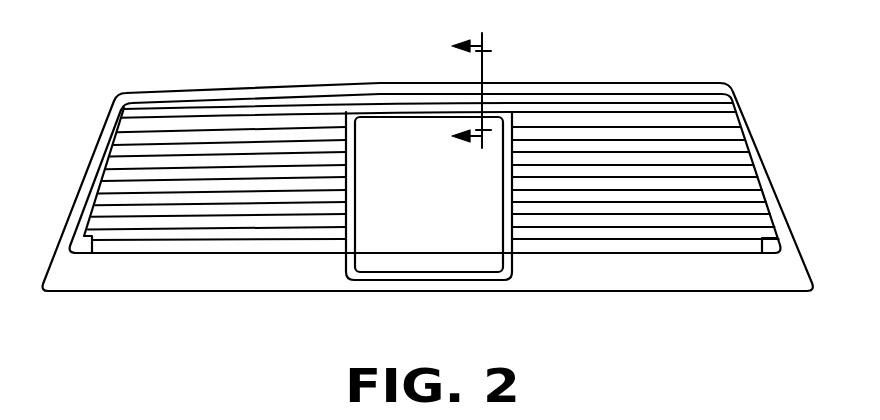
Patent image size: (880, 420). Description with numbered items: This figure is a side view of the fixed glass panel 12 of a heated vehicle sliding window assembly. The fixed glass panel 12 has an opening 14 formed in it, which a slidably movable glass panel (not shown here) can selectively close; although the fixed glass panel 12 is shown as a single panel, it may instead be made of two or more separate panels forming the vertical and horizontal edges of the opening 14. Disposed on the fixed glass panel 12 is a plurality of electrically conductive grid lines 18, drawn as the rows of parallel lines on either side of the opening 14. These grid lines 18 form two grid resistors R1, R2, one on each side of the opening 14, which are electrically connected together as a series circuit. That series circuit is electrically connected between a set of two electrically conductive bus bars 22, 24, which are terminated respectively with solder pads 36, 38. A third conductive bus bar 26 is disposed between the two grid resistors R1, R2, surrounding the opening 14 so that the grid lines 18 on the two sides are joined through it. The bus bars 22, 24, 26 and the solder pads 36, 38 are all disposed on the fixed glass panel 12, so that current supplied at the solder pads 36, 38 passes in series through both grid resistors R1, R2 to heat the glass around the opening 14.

The fixed glass panel 12 is at (697, 72).
The opening 14 is at (447, 232).
The electrically conductive grid lines 18 is at (127, 143).
The electrically conductive bus bar 22 is at (307, 96).
The electrically conductive bus bar 24 is at (608, 106).
The third conductive bus bar 26 is at (367, 281).
The solder pad 36 is at (473, 94).
The solder pad 38 is at (491, 103).
The grid resistor R1 is at (175, 214).
The grid resistor R2 is at (712, 164).